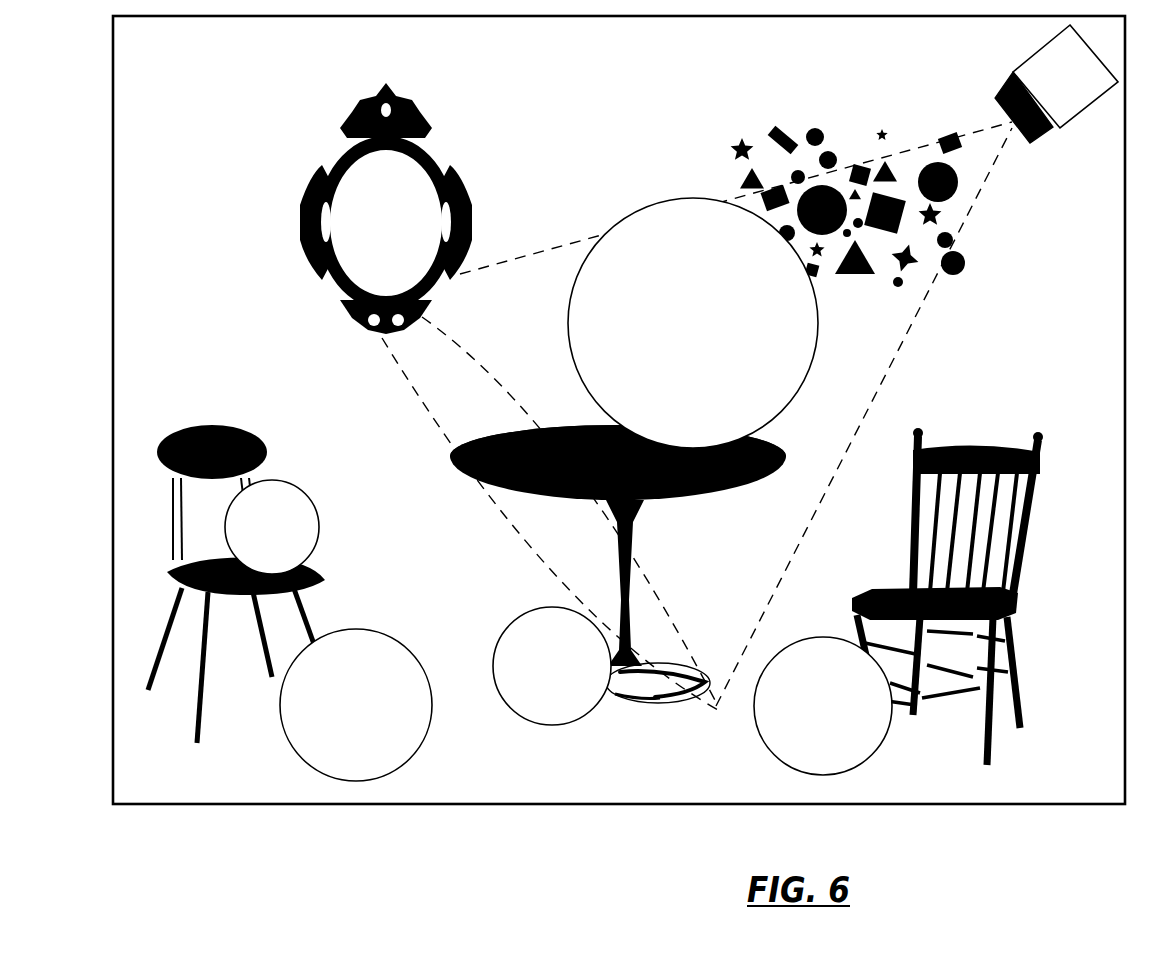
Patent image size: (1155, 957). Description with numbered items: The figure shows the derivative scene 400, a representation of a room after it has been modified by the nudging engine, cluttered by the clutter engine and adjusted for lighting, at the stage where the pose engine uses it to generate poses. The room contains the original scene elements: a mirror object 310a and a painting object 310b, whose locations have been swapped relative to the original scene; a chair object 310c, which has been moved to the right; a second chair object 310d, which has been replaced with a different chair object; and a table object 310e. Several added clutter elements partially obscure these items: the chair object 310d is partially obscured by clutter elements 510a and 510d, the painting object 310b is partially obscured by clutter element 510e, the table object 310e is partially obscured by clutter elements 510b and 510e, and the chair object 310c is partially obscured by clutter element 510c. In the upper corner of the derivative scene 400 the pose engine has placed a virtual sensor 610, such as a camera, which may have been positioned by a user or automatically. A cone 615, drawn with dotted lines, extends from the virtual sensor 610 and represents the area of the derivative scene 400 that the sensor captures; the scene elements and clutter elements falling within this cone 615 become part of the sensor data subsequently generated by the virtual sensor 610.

The derivative scene 400 is at (658, 893).
The virtual sensor 610 is at (1092, 113).
The cone 615 is at (837, 477).
The mirror object 310a is at (450, 273).
The painting object 310b is at (957, 305).
The chair object 310c is at (1018, 597).
The chair object 310d is at (325, 597).
The table object 310e is at (652, 527).
The clutter element 510a is at (356, 705).
The clutter element 510b is at (552, 666).
The clutter element 510c is at (823, 706).
The clutter element 510d is at (272, 527).
The clutter element 510e is at (693, 323).